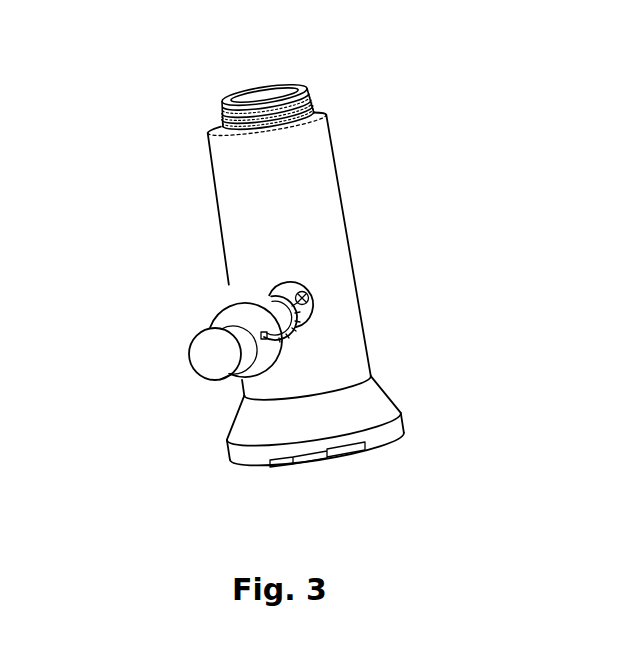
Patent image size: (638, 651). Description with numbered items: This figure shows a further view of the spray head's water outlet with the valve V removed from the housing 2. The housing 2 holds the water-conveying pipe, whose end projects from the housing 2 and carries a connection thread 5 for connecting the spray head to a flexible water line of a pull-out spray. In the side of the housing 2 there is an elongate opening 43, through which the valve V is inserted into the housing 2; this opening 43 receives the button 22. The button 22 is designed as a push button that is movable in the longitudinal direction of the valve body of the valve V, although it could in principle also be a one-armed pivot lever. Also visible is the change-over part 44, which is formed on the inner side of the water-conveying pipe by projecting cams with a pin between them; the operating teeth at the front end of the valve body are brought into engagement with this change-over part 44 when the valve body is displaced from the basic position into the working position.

The housing 2 is at (322, 187).
The connection thread 5 is at (322, 99).
The button 22 is at (190, 350).
The elongate opening 43 is at (260, 298).
The change-over part 44 is at (300, 294).
The valve V is at (214, 324).